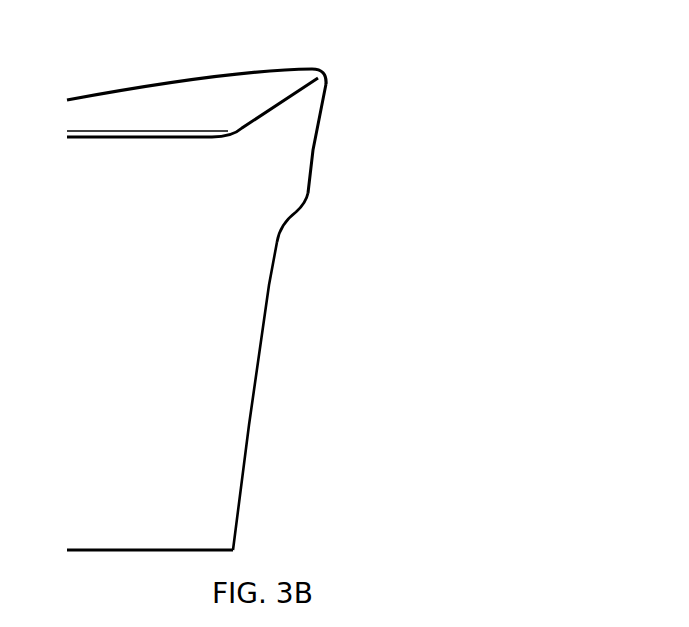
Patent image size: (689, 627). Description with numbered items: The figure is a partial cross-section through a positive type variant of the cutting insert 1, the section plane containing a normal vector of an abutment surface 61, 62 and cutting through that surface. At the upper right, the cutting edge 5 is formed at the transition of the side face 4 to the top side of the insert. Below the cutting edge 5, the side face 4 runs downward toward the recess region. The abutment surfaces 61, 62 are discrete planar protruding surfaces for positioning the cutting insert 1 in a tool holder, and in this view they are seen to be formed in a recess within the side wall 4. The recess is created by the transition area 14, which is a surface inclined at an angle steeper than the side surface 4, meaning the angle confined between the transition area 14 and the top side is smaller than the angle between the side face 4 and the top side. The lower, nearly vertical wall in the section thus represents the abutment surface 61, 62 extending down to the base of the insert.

The cutting insert 1 is at (447, 133).
The cutting edge 5 is at (238, 72).
The side face 4 is at (320, 133).
The transition area 14 is at (288, 223).
The abutment surface 61 is at (324, 396).
The abutment surface 62 is at (267, 313).